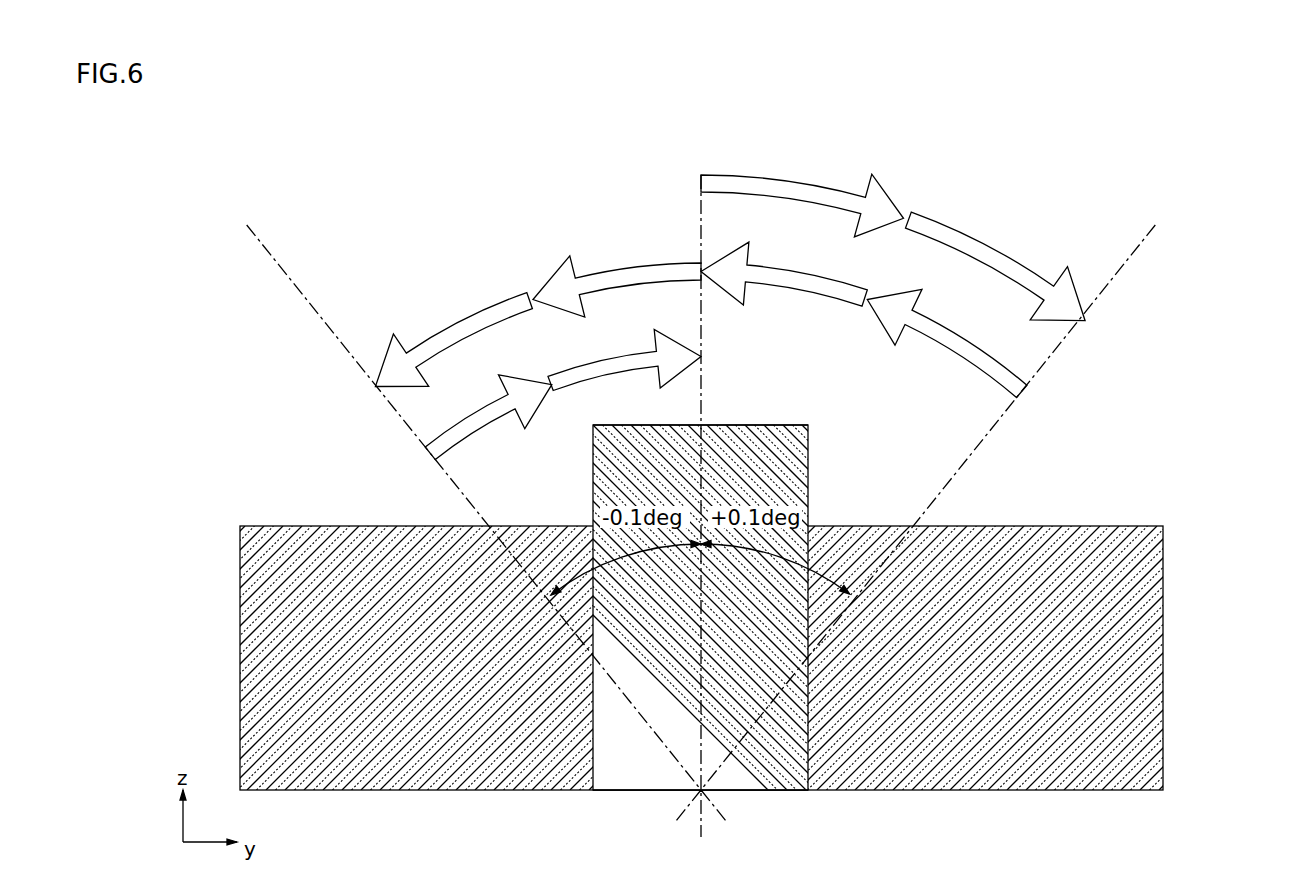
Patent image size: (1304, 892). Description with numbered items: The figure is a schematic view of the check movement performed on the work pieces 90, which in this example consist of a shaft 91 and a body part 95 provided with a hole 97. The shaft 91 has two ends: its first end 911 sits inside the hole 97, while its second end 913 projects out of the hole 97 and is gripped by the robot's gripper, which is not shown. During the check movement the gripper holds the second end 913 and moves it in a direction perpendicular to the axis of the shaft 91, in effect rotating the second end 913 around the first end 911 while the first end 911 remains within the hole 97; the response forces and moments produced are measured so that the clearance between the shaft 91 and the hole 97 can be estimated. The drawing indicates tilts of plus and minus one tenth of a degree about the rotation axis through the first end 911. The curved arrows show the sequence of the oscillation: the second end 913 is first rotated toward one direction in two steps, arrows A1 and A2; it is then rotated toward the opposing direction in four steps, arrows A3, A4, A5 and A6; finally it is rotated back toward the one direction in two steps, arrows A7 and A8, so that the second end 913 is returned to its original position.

The work piece 90 is at (652, 639).
The shaft 91 is at (826, 639).
The first end 911 is at (630, 790).
The second end 913 is at (775, 424).
The body part 95 is at (1163, 562).
The hole 97 is at (808, 747).
The arrow A1 is at (802, 193).
The arrow A2 is at (996, 266).
The arrow A3 is at (947, 343).
The arrow A4 is at (784, 274).
The arrow A5 is at (617, 278).
The arrow A6 is at (453, 340).
The arrow A7 is at (488, 417).
The arrow A8 is at (624, 359).